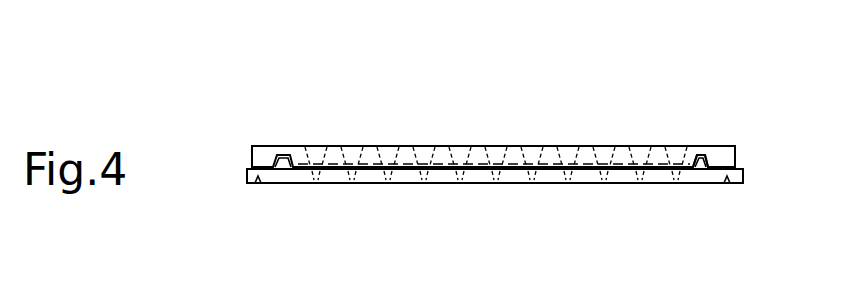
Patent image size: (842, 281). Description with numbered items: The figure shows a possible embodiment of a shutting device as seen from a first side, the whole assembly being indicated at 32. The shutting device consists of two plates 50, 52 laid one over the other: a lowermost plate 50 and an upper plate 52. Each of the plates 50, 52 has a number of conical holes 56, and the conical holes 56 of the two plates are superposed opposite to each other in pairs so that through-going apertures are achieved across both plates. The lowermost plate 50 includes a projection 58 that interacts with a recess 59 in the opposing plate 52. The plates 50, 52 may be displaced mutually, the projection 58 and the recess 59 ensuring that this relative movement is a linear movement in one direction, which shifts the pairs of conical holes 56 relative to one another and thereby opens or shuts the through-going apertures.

The panel assembly 32 is at (479, 138).
The plate 52 is at (265, 147).
The plate 50 is at (280, 185).
The conical holes 56 is at (587, 183).
The recess 59 is at (704, 157).
The projection 58 is at (702, 167).